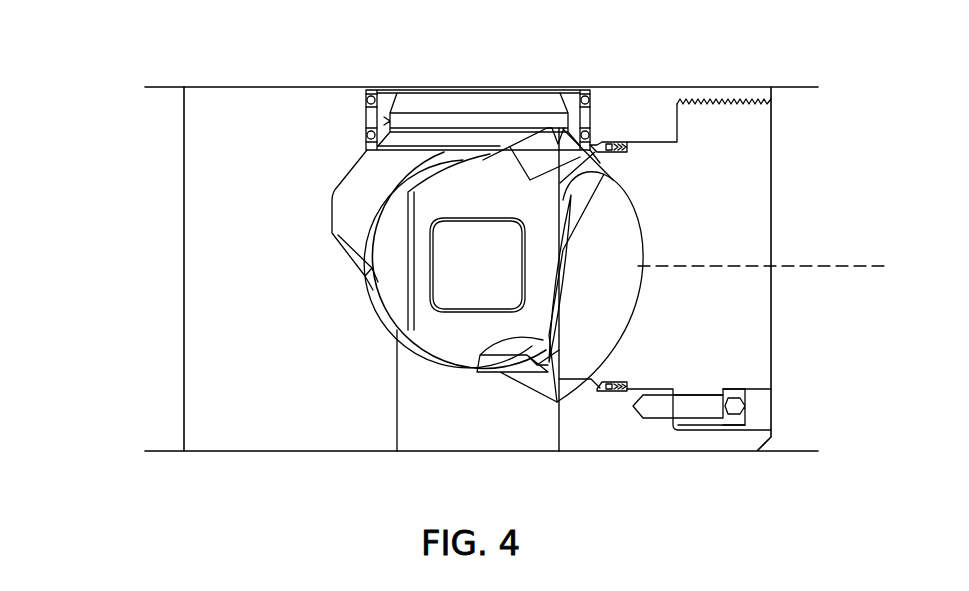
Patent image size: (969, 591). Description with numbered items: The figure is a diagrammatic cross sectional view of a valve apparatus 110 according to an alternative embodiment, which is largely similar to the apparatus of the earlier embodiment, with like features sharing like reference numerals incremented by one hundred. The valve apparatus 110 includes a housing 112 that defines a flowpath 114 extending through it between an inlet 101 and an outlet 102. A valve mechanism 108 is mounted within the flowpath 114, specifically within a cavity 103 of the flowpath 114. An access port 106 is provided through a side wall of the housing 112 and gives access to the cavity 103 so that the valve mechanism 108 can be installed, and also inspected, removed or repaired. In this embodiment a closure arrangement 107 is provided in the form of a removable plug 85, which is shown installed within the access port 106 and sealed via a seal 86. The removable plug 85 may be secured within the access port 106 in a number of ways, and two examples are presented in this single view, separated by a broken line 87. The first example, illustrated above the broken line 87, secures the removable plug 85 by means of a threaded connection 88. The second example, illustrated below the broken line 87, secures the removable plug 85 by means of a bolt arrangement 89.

The valve apparatus 110 is at (148, 53).
The inlet 101 is at (413, 87).
The access port 106 is at (642, 140).
The threaded connection 88 is at (722, 100).
The closure arrangement 107 is at (797, 144).
The housing 112 is at (212, 137).
The removable plug 85 is at (760, 214).
The broken line 87 is at (817, 268).
The valve mechanism 108 is at (393, 289).
The flowpath 114 is at (397, 405).
The outlet 102 is at (416, 453).
The cavity 103 is at (544, 385).
The seal 86 is at (605, 392).
The bolt arrangement 89 is at (747, 410).